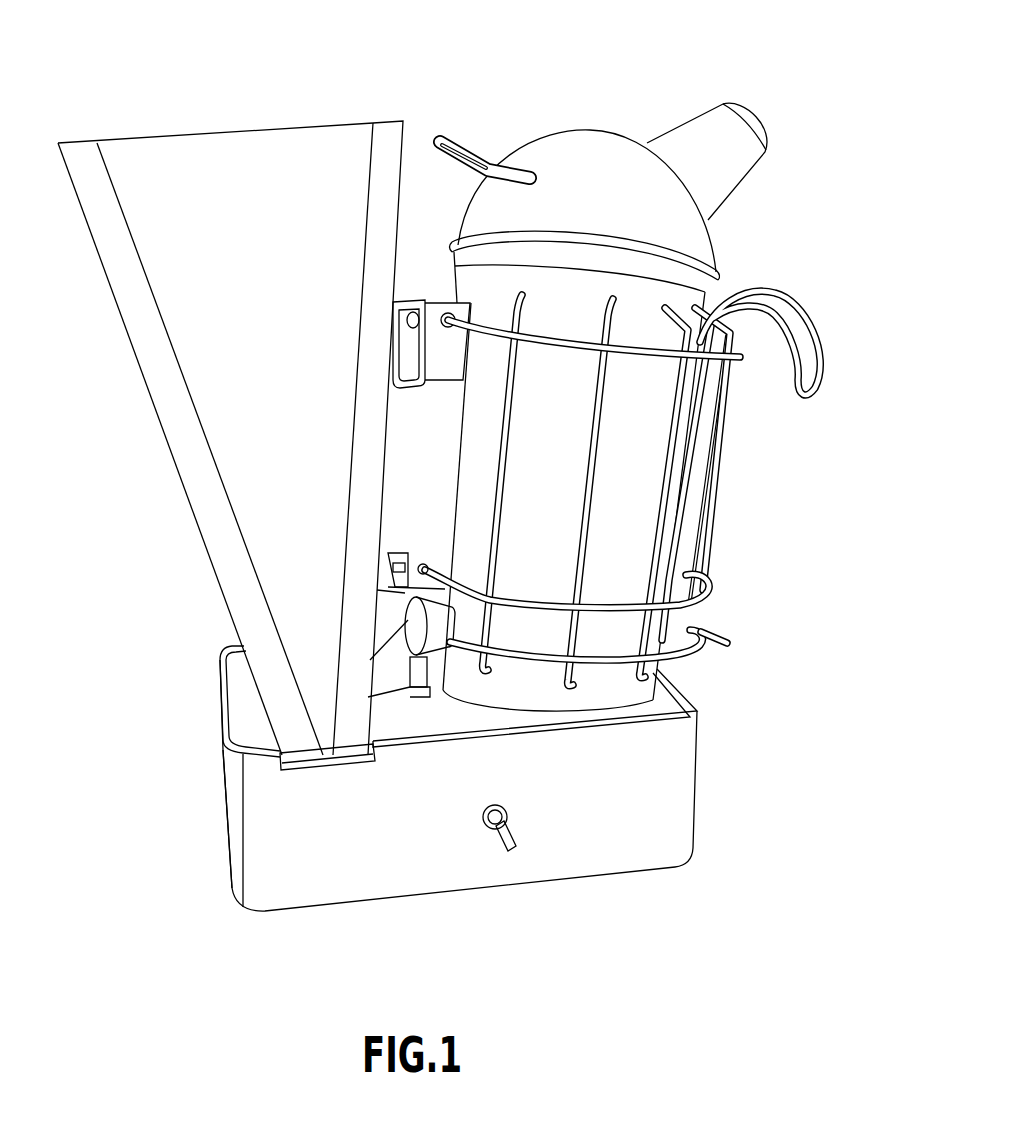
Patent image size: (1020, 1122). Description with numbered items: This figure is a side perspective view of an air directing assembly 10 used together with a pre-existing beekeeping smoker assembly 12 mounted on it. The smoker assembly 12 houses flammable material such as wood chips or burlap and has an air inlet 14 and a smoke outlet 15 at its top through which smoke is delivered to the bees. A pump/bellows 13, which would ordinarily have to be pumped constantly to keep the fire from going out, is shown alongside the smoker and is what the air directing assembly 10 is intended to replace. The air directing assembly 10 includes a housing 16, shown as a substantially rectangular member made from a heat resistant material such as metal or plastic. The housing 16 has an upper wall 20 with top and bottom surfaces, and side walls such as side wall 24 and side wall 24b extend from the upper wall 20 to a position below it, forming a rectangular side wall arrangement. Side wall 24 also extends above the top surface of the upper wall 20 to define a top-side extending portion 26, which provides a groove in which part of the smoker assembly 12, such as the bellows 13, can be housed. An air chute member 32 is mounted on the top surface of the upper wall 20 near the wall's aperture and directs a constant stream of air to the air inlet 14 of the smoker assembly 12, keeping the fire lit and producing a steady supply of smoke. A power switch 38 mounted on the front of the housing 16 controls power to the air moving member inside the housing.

The air directing assembly 10 is at (808, 744).
The smoker assembly 12 is at (386, 62).
The pump/bellows 13 is at (153, 168).
The air inlet 14 is at (432, 637).
The smoke outlet 15 is at (752, 117).
The housing 16 is at (678, 810).
The upper wall 20 is at (243, 703).
The side wall 24 is at (277, 833).
The side wall 24b is at (232, 782).
The top-side extending portion 26 is at (660, 723).
The air chute member 32 is at (390, 665).
The power switch 38 is at (512, 849).